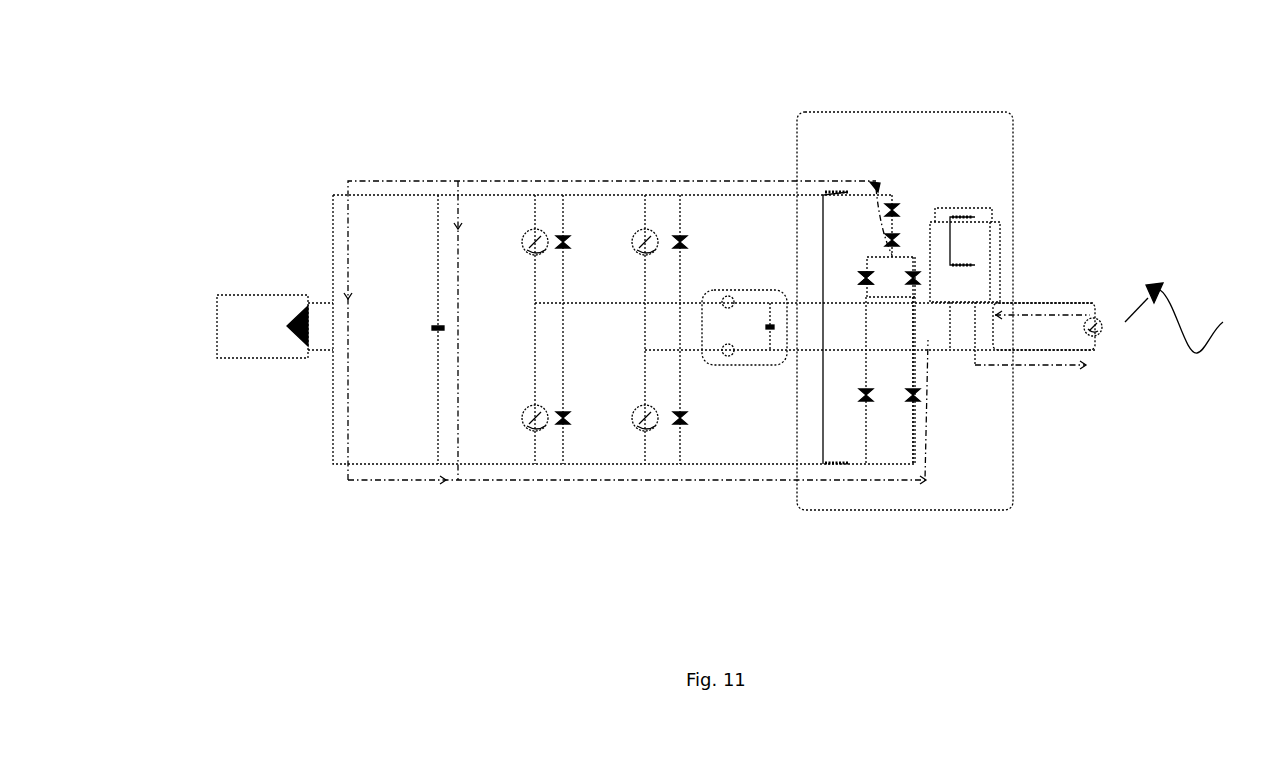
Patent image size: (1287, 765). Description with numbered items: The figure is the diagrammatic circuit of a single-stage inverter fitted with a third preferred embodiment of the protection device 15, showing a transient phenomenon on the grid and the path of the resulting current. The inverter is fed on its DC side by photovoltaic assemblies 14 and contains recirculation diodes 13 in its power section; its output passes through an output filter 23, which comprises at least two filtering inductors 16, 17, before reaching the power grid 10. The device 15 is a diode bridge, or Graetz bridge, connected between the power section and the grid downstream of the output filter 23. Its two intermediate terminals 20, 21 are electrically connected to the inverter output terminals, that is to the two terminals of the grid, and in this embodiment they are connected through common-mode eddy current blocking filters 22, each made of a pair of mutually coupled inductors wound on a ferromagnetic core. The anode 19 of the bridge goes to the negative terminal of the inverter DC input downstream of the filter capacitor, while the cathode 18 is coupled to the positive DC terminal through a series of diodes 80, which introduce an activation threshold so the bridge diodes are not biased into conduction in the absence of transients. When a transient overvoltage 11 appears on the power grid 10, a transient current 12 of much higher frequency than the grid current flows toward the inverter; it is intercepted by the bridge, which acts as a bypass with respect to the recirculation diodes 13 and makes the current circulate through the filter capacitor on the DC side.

The power grid 10 is at (1098, 335).
The transient overvoltage 11 is at (1163, 290).
The transient current 12 is at (1040, 303).
The recirculation diodes 13 is at (678, 238).
The photovoltaic assemblies 14 is at (268, 312).
The device 15 is at (973, 473).
The filtering inductor 16 is at (714, 289).
The filtering inductor 17 is at (737, 356).
The cathode 18 is at (870, 293).
The anode 19 is at (867, 463).
The intermediate terminal 20 is at (888, 257).
The intermediate terminal 21 is at (917, 340).
The common-mode eddy current blocking filter 22 is at (978, 208).
The output filter 23 is at (768, 362).
The series of diodes 80 is at (877, 186).